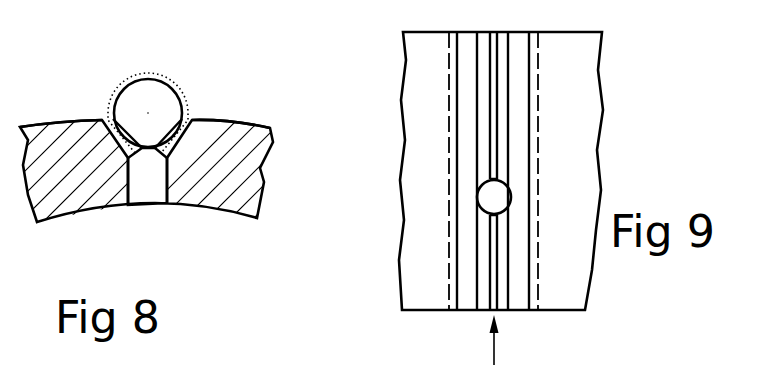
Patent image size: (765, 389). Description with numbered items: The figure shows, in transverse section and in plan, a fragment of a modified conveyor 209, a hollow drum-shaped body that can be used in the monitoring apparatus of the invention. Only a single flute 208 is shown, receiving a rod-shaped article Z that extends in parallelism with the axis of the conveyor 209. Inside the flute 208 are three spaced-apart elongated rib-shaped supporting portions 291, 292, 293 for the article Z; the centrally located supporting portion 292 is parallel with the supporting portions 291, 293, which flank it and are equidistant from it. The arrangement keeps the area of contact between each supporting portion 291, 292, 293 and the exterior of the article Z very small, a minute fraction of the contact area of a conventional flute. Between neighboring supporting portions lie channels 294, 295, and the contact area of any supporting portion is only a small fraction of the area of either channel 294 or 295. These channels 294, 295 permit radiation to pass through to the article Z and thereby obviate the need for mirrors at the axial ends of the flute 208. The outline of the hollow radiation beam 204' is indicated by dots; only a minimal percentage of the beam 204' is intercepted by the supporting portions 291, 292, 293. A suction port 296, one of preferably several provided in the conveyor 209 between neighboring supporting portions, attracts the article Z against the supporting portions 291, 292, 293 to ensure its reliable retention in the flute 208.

In FIG. 8, the hollow radiation beam 204' is at (130, 93).
In FIG. 8, the rod-shaped article Z is at (152, 97).
In FIG. 8, the flute 208 is at (190, 89).
In FIG. 9, the flute 208 is at (494, 350).
In FIG. 8, the modified conveyor 209 is at (236, 195).
In FIG. 9, the modified conveyor 209 is at (603, 86).
In FIG. 8, the supporting portion 291 is at (92, 118).
In FIG. 8, the supporting portion 292 is at (131, 212).
In FIG. 9, the supporting portion 292 is at (492, 35).
In FIG. 8, the supporting portion 293 is at (198, 113).
In FIG. 8, the channel 294 is at (117, 147).
In FIG. 8, the channel 295 is at (198, 146).
In FIG. 8, the suction port 296 is at (158, 194).
In FIG. 9, the suction port 296 is at (500, 197).